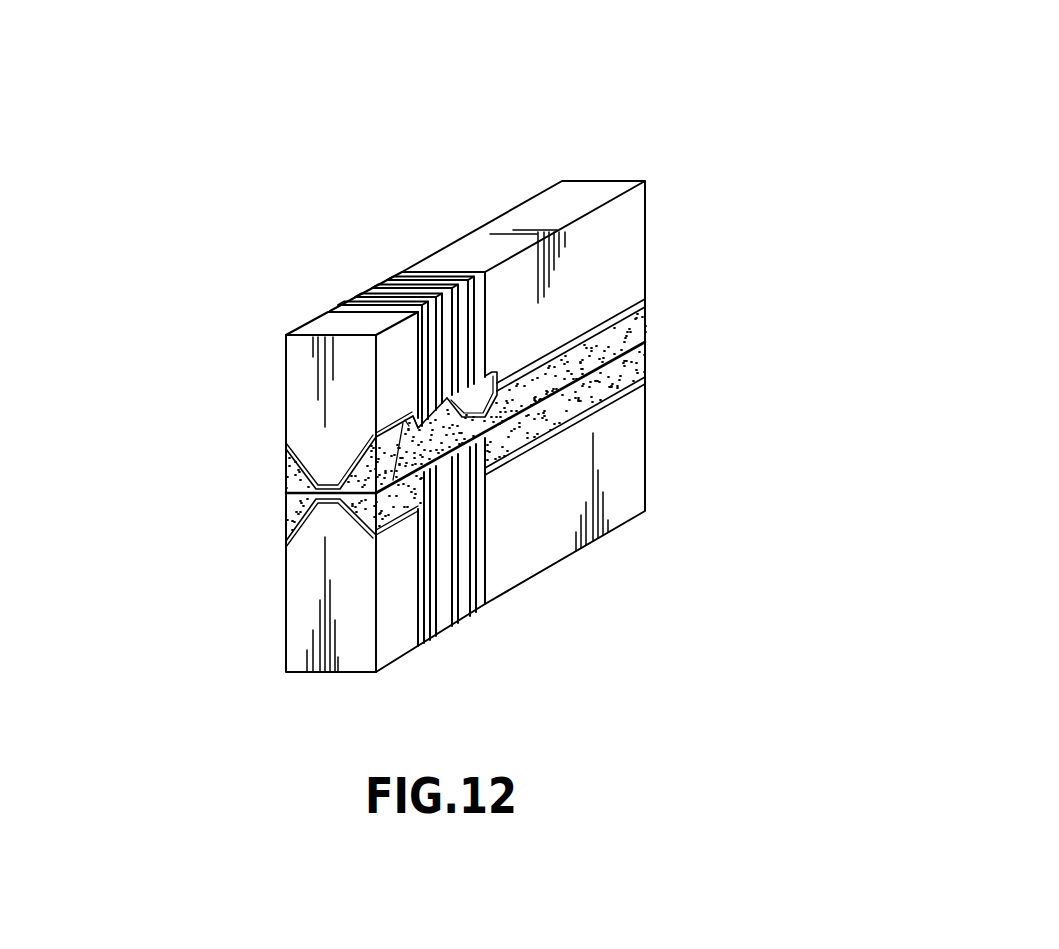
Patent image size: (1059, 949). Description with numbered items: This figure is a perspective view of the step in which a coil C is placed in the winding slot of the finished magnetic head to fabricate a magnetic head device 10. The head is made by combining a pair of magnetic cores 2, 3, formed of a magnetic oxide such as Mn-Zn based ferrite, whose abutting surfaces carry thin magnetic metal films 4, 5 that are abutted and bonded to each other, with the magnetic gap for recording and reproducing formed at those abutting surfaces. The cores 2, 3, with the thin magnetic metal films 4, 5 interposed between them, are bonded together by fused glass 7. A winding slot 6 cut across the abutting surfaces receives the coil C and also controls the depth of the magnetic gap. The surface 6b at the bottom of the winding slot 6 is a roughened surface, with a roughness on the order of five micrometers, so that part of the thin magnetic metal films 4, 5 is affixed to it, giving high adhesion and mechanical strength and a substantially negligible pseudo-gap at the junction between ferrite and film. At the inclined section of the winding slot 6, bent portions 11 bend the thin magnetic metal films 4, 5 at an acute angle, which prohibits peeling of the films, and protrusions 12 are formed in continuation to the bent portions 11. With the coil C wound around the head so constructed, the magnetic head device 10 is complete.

The magnetic head device 10 is at (632, 138).
The magnetic core 2 is at (620, 452).
The magnetic core 3 is at (615, 267).
The thin magnetic metal film 4 is at (286, 540).
The thin magnetic metal film 5 is at (286, 448).
The winding slot 6 is at (485, 440).
The surface of the bottom of the winding slot 6b is at (490, 367).
The fused glass 7 is at (297, 487).
The bent portion 11 is at (407, 423).
The protrusion 12 is at (417, 424).
The coil C is at (423, 281).